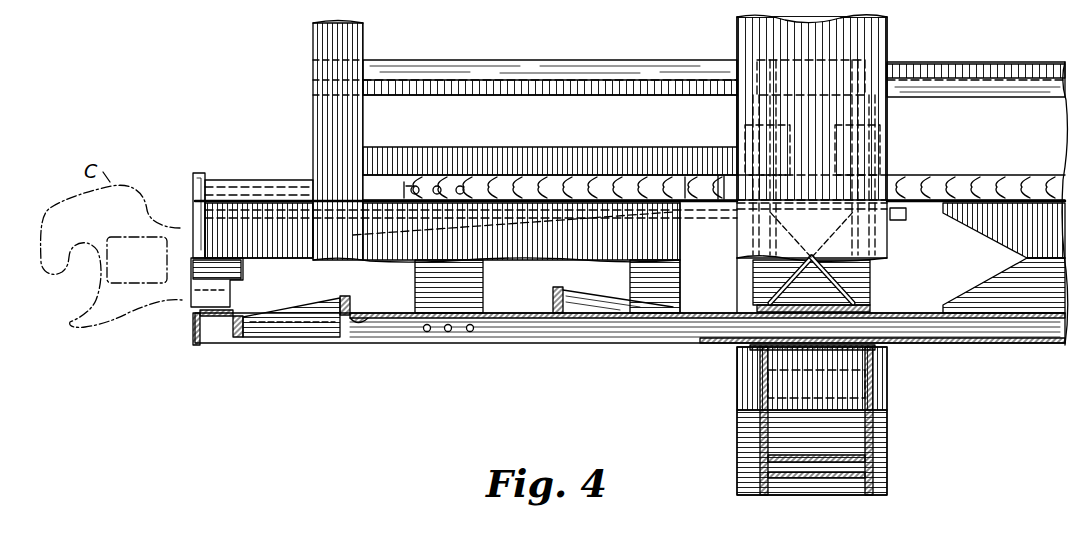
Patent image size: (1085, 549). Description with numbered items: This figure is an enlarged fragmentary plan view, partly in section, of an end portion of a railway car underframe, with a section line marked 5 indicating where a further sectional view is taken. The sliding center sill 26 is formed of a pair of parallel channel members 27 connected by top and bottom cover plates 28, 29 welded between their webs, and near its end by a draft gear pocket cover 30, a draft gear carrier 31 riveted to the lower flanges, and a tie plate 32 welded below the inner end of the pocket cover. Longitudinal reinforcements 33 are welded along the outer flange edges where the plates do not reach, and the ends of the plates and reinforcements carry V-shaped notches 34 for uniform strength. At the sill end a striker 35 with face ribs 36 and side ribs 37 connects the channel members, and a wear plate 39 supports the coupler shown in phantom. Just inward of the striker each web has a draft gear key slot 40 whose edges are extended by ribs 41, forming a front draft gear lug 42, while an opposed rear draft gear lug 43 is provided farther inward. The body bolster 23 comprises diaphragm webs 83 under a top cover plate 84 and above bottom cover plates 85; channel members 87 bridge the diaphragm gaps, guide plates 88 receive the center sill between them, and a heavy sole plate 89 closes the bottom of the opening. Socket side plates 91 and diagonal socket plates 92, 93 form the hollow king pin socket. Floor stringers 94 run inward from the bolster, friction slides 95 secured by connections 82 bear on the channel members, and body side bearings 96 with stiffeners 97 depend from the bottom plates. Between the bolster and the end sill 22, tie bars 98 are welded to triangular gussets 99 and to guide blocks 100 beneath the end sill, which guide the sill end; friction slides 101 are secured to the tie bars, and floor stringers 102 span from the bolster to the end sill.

The section line 5- 5 is at (95, 258).
The end sill 22 is at (364, 110).
The body bolster 23 is at (898, 113).
The center sill 26 is at (545, 353).
The channel member 27 is at (720, 205).
The top cover plate 28 is at (976, 222).
The bottom cover plate 29 is at (978, 296).
The draft gear pocket cover 30 is at (400, 254).
The draft gear carrier 31 is at (492, 276).
The tie plate 32 is at (678, 281).
The longitudinal reinforcement 33 is at (702, 345).
The V-shaped notch 34 is at (1027, 258).
The striker 35 is at (186, 185).
The face rib 36 is at (256, 234).
The side rib 37 is at (230, 312).
The wear plate 39 is at (205, 292).
The draft gear key slot 40 is at (354, 328).
The rib 41 is at (308, 301).
The front draft gear lug 42 is at (348, 290).
The rear draft gear lug 43 is at (546, 300).
The connection 82 is at (900, 220).
The web 83 is at (840, 72).
The top cover plate 84 is at (735, 102).
The bottom cover plate 85 is at (890, 388).
The channel member 87 is at (838, 125).
The guide plate 88 is at (840, 172).
The sole plate 89 is at (760, 278).
The socket side plate 91 is at (815, 192).
The socket plate 92 is at (790, 262).
The socket plate 93 is at (842, 262).
The floor stringer 94 is at (968, 63).
The friction slide 95 is at (984, 180).
The body side bearing 96 is at (888, 446).
The stiffener 97 is at (851, 478).
The tie bar 98 is at (560, 156).
The triangular gusset 99 is at (722, 175).
The guide block 100 is at (412, 182).
The friction slide 101 is at (660, 184).
The floor stringer 102 is at (545, 64).